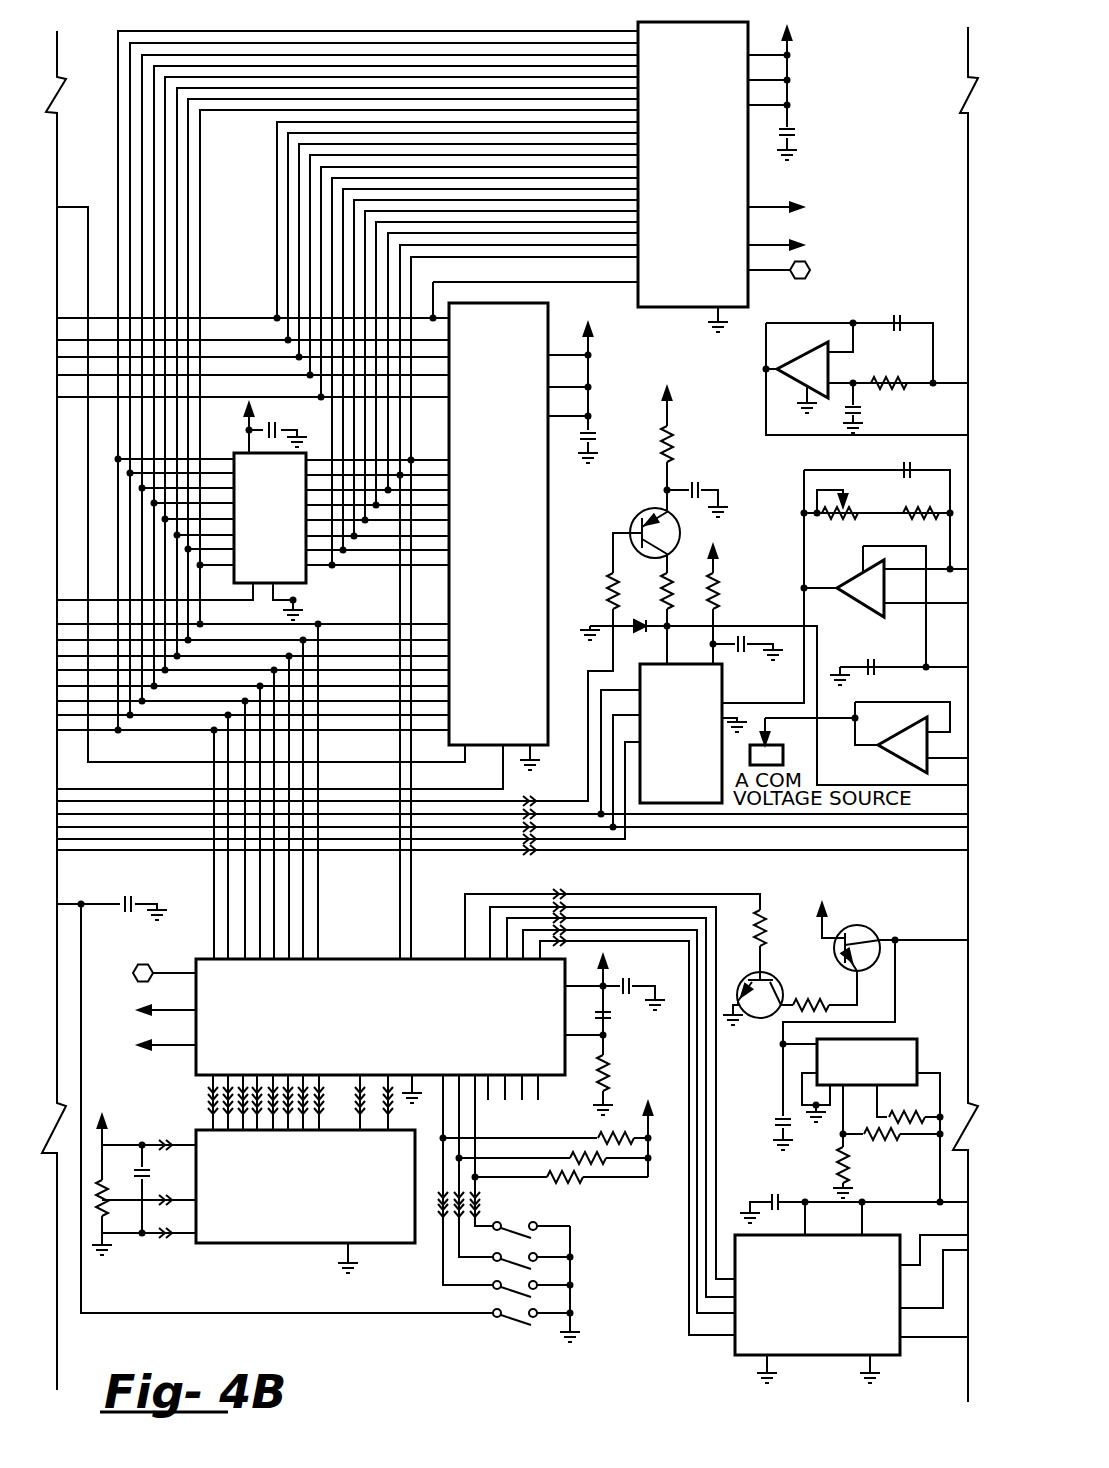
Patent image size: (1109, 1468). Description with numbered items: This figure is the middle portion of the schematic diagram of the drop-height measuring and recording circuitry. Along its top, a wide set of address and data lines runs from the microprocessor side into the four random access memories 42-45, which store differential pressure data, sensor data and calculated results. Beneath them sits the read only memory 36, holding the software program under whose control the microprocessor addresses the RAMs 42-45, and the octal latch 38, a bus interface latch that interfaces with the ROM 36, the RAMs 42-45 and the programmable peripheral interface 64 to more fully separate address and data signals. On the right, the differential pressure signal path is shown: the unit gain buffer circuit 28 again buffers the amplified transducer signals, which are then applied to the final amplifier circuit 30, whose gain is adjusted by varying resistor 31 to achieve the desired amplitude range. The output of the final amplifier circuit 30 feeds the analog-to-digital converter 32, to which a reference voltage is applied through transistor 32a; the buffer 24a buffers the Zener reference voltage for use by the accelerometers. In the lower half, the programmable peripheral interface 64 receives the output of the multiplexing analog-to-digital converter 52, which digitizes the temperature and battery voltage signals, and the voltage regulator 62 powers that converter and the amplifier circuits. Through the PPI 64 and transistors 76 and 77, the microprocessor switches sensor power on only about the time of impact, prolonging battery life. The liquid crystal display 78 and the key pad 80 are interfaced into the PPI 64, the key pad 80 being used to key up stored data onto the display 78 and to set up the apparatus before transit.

The random access memories 42-45 is at (724, 177).
The read only memory 36 is at (513, 375).
The octal latch 38 is at (308, 578).
The buffer circuit 28 is at (790, 360).
The transistor 32a is at (640, 523).
The analog-to-digital converter 32 is at (723, 697).
The resistor 31 is at (845, 520).
The final amplifier circuit 30 is at (855, 598).
The buffer 24a is at (897, 762).
The programmable peripheral interface 64 is at (490, 1029).
The transistor 76 is at (765, 1020).
The transistor 77 is at (862, 925).
The voltage regulator 62 is at (907, 1037).
The liquid crystal display 78 is at (277, 1237).
The key pad 80 is at (572, 1270).
The multiplexing analog-to-digital converter 52 is at (747, 1347).